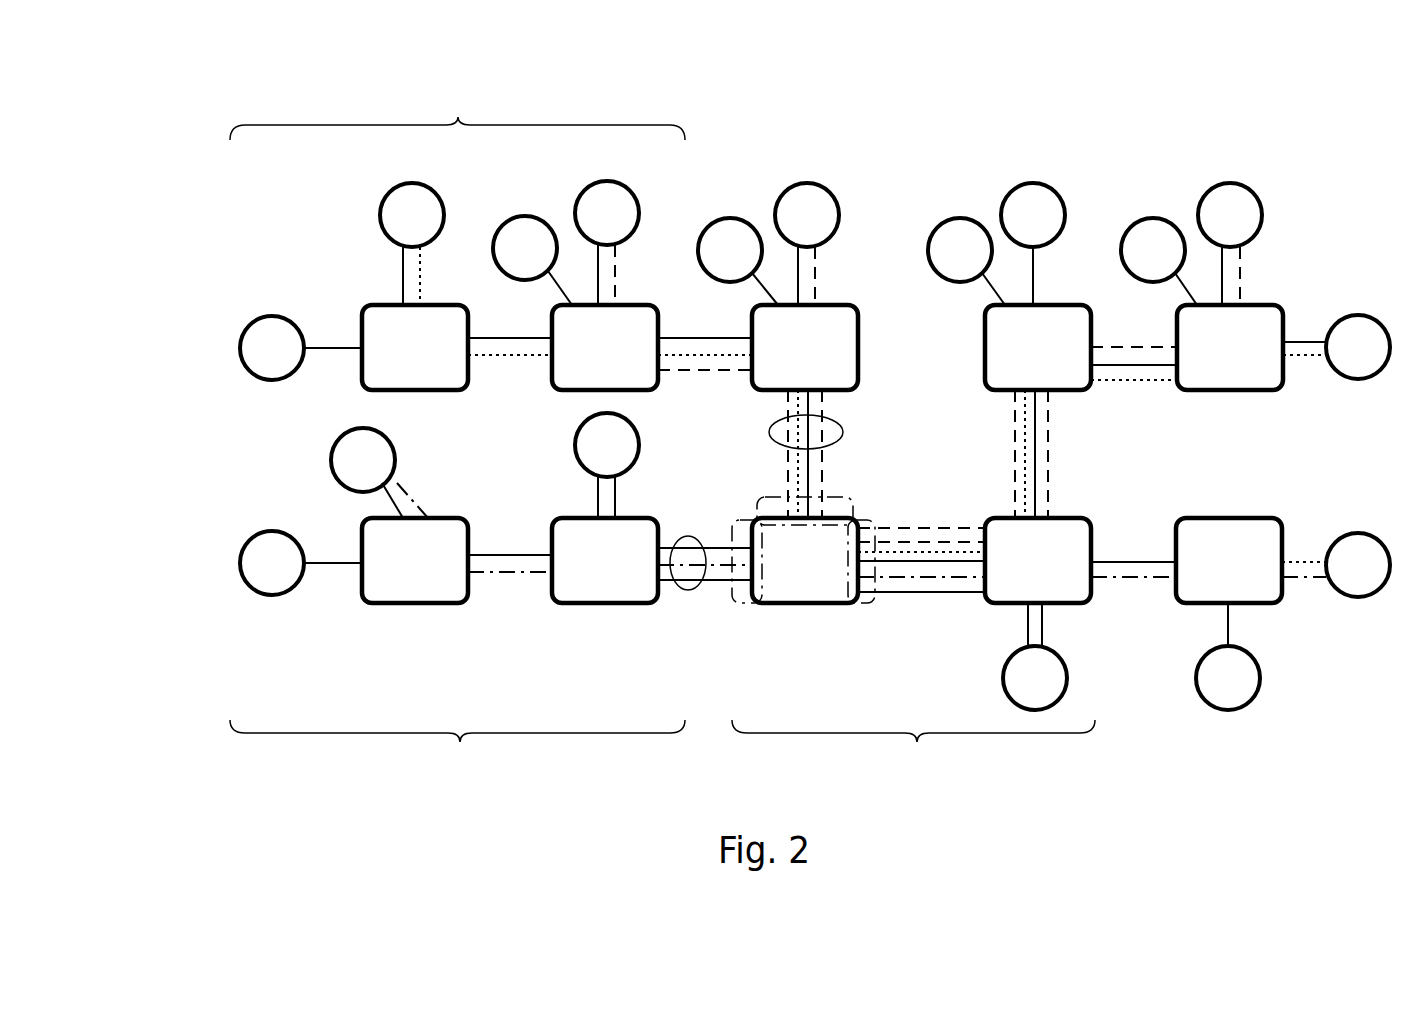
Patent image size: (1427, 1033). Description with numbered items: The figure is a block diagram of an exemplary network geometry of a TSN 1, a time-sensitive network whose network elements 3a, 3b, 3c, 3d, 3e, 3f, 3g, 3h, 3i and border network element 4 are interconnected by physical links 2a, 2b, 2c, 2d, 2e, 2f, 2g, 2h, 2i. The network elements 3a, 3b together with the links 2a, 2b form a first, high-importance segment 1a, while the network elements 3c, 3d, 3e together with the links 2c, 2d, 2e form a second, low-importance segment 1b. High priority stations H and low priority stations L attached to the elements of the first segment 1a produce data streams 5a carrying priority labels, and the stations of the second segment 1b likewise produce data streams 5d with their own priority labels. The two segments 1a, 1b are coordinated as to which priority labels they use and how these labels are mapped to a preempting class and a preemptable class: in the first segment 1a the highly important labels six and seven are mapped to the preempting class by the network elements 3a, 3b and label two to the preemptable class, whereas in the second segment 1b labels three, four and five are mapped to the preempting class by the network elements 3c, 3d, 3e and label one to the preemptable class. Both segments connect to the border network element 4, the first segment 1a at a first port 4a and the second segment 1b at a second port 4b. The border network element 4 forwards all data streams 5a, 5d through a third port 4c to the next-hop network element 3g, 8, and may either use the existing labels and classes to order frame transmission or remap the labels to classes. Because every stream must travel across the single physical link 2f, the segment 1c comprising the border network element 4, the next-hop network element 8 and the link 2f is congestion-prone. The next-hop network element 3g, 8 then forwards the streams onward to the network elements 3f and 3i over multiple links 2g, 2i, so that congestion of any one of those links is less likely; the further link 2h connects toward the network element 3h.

The TSN 1 is at (1297, 158).
The first, high-importance segment 1a is at (460, 745).
The second, low-importance segment 1b is at (458, 112).
The congestion-prone segment 1c is at (917, 745).
The physical link 2a is at (532, 550).
The physical link 2b is at (713, 547).
The physical link 2c is at (523, 337).
The physical link 2d is at (710, 337).
The physical link 2e is at (808, 468).
The physical link 2f is at (963, 562).
The link 2g is at (1033, 460).
The physical link 2h is at (1140, 370).
The link 2i is at (1123, 557).
The network element 3a is at (427, 603).
The network element 3b is at (572, 605).
The network element 3c is at (432, 303).
The network element 3d is at (630, 303).
The network element 3e is at (832, 303).
The network element 3f is at (1058, 303).
The next-hop network element 3g is at (1077, 603).
The network element 3h is at (1267, 303).
The network element 3i is at (1265, 607).
The border network element 4 is at (823, 603).
The first port 4a is at (747, 603).
The second port 4b is at (762, 497).
The third port 4c is at (870, 600).
The data stream 5a is at (691, 592).
The data stream 5d is at (841, 428).
The next-hop network element 8 is at (1038, 560).